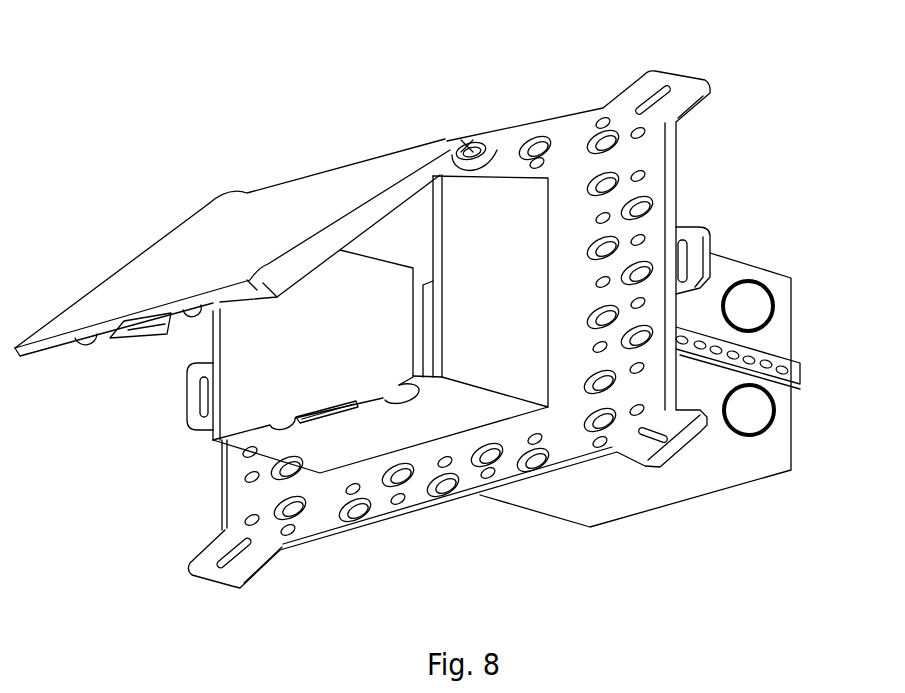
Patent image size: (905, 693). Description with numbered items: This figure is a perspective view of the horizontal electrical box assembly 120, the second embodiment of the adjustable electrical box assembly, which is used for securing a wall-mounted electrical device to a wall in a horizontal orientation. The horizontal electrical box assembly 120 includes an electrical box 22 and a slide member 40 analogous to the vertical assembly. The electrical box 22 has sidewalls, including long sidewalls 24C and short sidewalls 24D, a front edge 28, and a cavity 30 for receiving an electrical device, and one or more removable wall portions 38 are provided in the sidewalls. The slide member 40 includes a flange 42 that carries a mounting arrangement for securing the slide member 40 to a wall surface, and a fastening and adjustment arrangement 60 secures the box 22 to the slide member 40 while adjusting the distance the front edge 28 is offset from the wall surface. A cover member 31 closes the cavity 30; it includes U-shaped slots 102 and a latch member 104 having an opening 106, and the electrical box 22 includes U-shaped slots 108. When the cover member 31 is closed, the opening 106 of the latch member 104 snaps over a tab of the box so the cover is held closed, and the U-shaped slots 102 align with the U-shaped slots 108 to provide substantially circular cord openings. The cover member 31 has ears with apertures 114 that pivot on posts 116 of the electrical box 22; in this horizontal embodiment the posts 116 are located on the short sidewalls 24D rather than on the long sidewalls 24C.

The horizontal electrical box assembly 120 is at (198, 160).
The slide member 40 is at (683, 72).
The apertures 114 is at (466, 147).
The posts 116 is at (472, 147).
The electrical box 22 is at (782, 278).
The flange 42 is at (585, 183).
The cover member 31 is at (258, 250).
The opening 106 is at (138, 328).
The front edge 28 is at (436, 304).
The short sidewalls 24D is at (513, 290).
The removable wall portions 38 is at (760, 315).
The U-shaped slots 108 is at (393, 395).
The cavity 30 is at (406, 320).
The U-shaped slots 102 is at (92, 343).
The long sidewalls 24C is at (406, 440).
The latch member 104 is at (141, 340).
The fastening and adjustment arrangement 60 is at (728, 374).